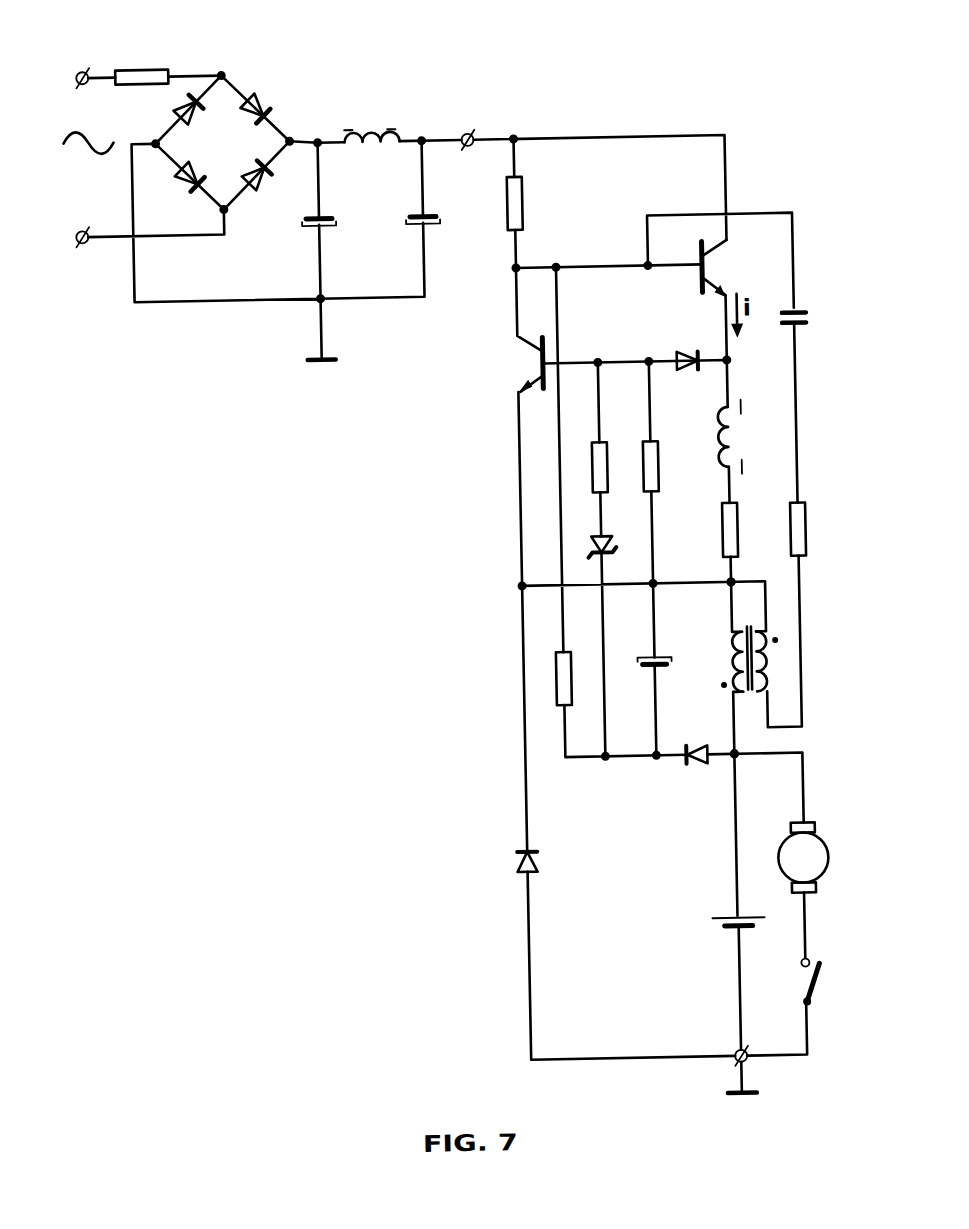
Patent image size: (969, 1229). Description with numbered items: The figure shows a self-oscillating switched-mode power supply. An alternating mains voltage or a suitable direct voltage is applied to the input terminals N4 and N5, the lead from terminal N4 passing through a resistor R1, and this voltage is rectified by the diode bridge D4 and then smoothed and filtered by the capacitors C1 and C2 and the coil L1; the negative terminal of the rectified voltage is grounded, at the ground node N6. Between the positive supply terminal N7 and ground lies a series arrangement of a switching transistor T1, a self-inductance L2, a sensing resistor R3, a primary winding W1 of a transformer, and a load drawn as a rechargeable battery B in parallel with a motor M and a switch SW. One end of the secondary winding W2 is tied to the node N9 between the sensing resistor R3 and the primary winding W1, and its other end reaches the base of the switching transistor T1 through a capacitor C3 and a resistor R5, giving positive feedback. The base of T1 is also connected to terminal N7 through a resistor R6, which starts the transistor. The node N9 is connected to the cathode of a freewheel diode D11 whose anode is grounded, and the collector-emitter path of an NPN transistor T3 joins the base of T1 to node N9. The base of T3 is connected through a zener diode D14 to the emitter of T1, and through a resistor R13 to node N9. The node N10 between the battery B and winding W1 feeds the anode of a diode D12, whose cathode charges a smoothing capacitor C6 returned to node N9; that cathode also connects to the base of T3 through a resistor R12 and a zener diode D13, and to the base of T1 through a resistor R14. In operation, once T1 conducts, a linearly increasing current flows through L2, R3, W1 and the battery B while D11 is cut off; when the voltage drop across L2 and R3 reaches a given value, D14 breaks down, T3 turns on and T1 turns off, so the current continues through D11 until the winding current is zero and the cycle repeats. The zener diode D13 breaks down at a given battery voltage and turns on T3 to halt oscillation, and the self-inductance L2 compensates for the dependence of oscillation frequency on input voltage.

The input terminal N4 is at (86, 58).
The resistor R1 is at (149, 60).
The diode bridge D4 is at (240, 146).
The input terminal N5 is at (87, 238).
The coil L1 is at (374, 129).
The positive supply terminal N7 is at (470, 128).
The capacitor C1 is at (339, 223).
The capacitor C2 is at (443, 223).
The resistor R6 is at (525, 196).
The switching transistor T1 is at (724, 268).
The zener diode D14 is at (683, 348).
The capacitor C3 is at (781, 333).
The NPN transistor T3 is at (524, 362).
The self-inductance L2 is at (741, 432).
The resistor R12 is at (588, 468).
The resistor R13 is at (656, 453).
The zener diode D13 is at (586, 543).
The sensing resistor R3 is at (716, 519).
The resistor R5 is at (784, 544).
The node N9 is at (722, 589).
The smoothing capacitor C6 is at (634, 655).
The primary winding W1 is at (732, 656).
The secondary winding W2 is at (760, 672).
The resistor R14 is at (547, 683).
The node N10 is at (723, 752).
The diode D12 is at (693, 770).
The freewheel diode D11 is at (505, 862).
The motor M is at (779, 836).
The rechargeable battery B is at (708, 924).
The switch SW is at (797, 985).
The ground node N6 is at (719, 1056).